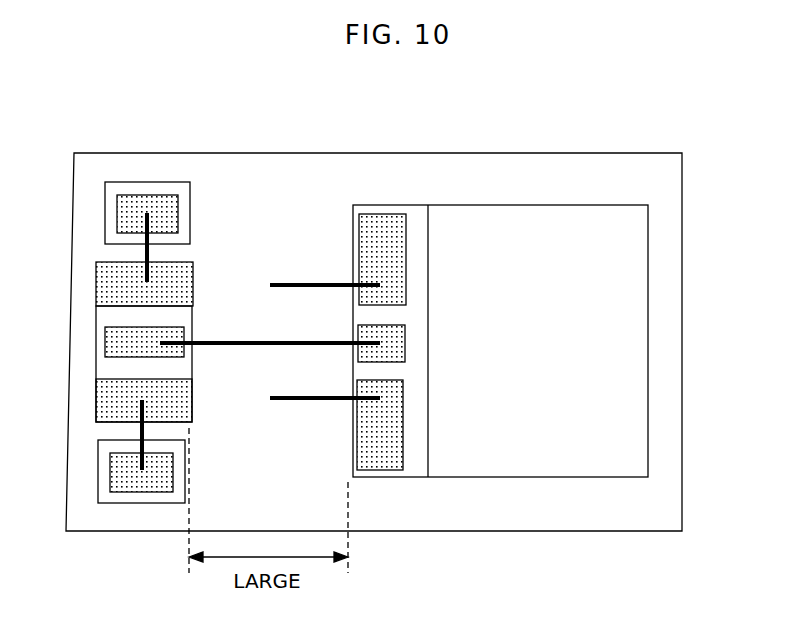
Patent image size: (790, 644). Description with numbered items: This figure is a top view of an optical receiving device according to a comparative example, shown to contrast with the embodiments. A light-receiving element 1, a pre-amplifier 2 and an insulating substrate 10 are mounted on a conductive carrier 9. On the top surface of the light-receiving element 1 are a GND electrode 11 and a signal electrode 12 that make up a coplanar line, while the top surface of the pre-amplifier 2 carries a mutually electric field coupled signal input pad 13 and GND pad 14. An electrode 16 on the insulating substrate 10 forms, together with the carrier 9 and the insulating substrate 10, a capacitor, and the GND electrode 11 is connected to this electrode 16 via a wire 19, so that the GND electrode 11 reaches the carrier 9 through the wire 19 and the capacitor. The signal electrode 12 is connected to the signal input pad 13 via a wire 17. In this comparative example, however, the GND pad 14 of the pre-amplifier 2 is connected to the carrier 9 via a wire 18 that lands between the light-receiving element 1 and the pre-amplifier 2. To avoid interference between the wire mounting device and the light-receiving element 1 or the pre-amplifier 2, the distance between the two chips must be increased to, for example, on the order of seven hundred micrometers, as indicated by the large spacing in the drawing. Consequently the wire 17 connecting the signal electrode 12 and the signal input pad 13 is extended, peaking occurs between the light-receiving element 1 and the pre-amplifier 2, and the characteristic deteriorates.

The light-receiving element 1 is at (90, 367).
The pre-amplifier 2 is at (618, 205).
The carrier 9 is at (313, 153).
The insulating substrate 10 is at (185, 193).
The GND electrode 11 is at (113, 283).
The signal electrode 12 is at (110, 340).
The signal input pad 13 is at (407, 342).
The GND pad 14 is at (407, 258).
The electrode 16 is at (140, 207).
The wire 17 is at (235, 343).
The wire 18 is at (307, 285).
The wire 19 is at (145, 258).